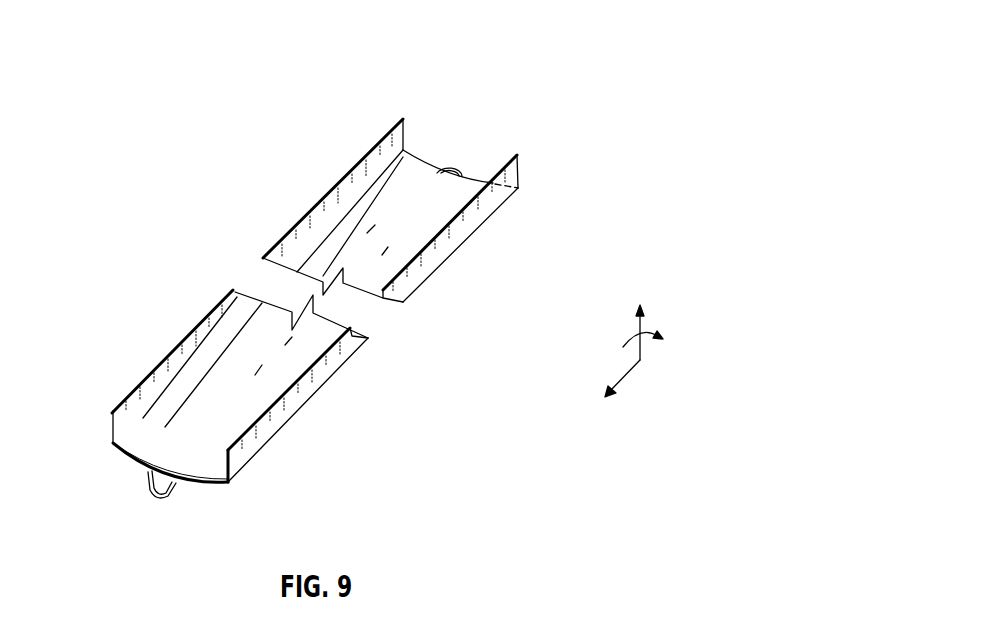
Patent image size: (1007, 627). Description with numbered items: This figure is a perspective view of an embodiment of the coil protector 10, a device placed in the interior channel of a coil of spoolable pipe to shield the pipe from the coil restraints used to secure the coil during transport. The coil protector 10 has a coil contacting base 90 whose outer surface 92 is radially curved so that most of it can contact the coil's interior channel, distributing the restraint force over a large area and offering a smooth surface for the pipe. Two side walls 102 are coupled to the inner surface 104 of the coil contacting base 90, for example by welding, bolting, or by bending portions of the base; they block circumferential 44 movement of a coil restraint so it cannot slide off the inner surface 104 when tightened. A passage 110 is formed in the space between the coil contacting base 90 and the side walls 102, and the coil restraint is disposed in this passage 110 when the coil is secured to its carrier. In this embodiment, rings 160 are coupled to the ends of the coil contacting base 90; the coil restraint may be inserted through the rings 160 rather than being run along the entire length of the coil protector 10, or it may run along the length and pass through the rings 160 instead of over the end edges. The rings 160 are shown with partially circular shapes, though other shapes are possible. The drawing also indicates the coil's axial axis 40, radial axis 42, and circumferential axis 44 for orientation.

The coil protector 10 is at (328, 309).
The side wall 102 is at (197, 325).
The inner surface 104 is at (278, 372).
The passage 110 is at (432, 148).
The ring 160 is at (452, 166).
The coil contacting base 90 is at (197, 463).
The outer surface 92 is at (190, 478).
The axial axis 40 is at (625, 380).
The radial axis 42 is at (642, 348).
The circumferential axis 44 is at (636, 335).